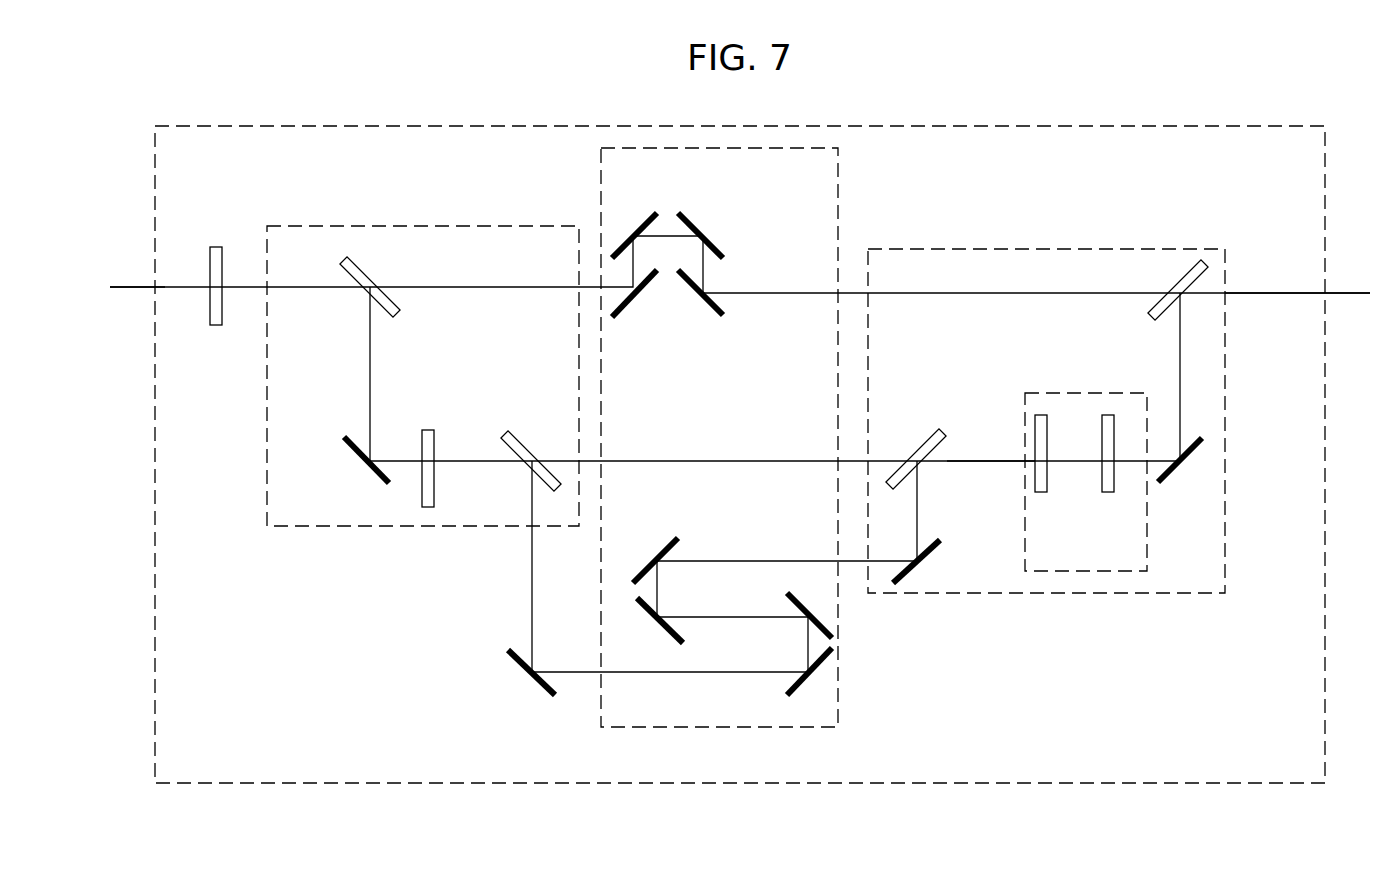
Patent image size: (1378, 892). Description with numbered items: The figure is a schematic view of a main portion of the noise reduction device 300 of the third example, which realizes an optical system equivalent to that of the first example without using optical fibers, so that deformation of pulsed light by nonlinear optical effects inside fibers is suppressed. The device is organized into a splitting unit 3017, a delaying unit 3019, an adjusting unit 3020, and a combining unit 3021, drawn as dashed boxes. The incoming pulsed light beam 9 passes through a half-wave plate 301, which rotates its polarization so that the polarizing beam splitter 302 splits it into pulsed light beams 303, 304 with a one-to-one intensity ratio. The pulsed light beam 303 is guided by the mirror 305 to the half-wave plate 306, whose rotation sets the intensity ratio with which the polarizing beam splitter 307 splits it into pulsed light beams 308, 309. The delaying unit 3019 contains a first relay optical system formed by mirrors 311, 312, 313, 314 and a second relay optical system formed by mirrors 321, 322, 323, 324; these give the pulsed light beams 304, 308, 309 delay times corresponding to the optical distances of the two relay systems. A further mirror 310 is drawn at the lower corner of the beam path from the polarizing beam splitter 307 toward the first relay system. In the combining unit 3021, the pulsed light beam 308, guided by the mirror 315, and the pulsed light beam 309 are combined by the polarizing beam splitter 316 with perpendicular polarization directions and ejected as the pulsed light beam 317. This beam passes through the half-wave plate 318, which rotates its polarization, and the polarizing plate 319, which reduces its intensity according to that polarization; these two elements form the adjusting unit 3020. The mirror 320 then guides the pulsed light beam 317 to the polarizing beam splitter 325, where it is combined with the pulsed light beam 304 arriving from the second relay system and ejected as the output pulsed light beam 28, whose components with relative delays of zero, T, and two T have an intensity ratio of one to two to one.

The pulsed light beam 9 is at (181, 286).
The pulsed light beam 28 is at (1275, 292).
The noise reduction device 300 is at (808, 784).
The half-wave plate 301 is at (216, 325).
The polarizing beam splitter 302 is at (396, 318).
The pulsed light beam 303 is at (370, 387).
The pulsed light beam 304 is at (487, 288).
The mirror 305 is at (367, 470).
The half-wave plate 306 is at (428, 430).
The polarizing beam splitter 307 is at (535, 438).
The pulsed light beam 308 is at (532, 600).
The pulsed light beam 309 is at (752, 461).
The mirror 310 is at (525, 679).
The mirror 311 is at (789, 685).
The mirror 312 is at (788, 600).
The mirror 313 is at (657, 615).
The mirror 314 is at (652, 557).
The mirror 315 is at (930, 560).
The polarizing beam splitter 316 is at (911, 440).
The pulsed light beam 317 is at (982, 461).
The half-wave plate 318 is at (1042, 492).
The polarizing plate 319 is at (1108, 492).
The mirror 320 is at (1183, 468).
The mirror 321 is at (633, 298).
The mirror 322 is at (626, 244).
The mirror 323 is at (709, 243).
The mirror 324 is at (700, 298).
The polarizing beam splitter 325 is at (1153, 305).
The splitting unit 3017 is at (419, 527).
The delaying unit 3019 is at (720, 728).
The adjusting unit 3020 is at (1083, 393).
The combining unit 3021 is at (1040, 594).